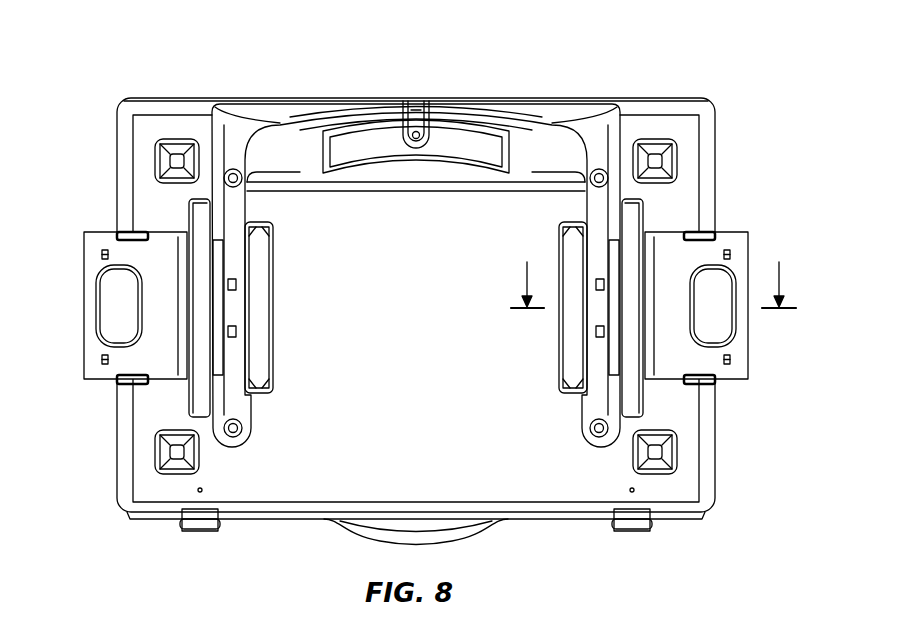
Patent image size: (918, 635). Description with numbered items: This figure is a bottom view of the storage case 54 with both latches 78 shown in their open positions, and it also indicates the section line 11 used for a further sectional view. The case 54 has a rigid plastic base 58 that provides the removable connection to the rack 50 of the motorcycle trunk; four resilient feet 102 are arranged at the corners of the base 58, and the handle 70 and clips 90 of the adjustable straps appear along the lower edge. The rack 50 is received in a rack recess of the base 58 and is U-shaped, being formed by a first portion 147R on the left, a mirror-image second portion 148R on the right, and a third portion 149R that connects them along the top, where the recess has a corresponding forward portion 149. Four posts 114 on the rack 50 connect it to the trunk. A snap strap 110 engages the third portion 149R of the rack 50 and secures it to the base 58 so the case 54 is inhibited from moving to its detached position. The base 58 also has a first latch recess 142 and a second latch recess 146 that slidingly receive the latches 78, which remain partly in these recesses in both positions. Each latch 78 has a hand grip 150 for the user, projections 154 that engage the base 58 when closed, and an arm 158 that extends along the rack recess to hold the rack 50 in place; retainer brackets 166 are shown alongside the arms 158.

The storage case 54 is at (143, 72).
The base 58 is at (680, 122).
The rack 50 is at (302, 118).
The forward portion 149 is at (539, 143).
The third portion 149R is at (357, 112).
The snap strap 110 is at (418, 115).
The first portion 147R is at (235, 203).
The second portion 148R is at (595, 205).
The posts 114 is at (226, 172).
The resilient feet 102 is at (177, 160).
The latches 78 is at (88, 236).
The hand grips 150 is at (118, 300).
The first latch recess 142 is at (143, 364).
The second latch recess 146 is at (696, 365).
The arms 158 is at (196, 212).
The left retainer bracket 166 is at (249, 356).
The projections 154 is at (610, 355).
The clip 90 is at (202, 522).
The handle 70 is at (476, 541).
The section line 11 is at (653, 274).